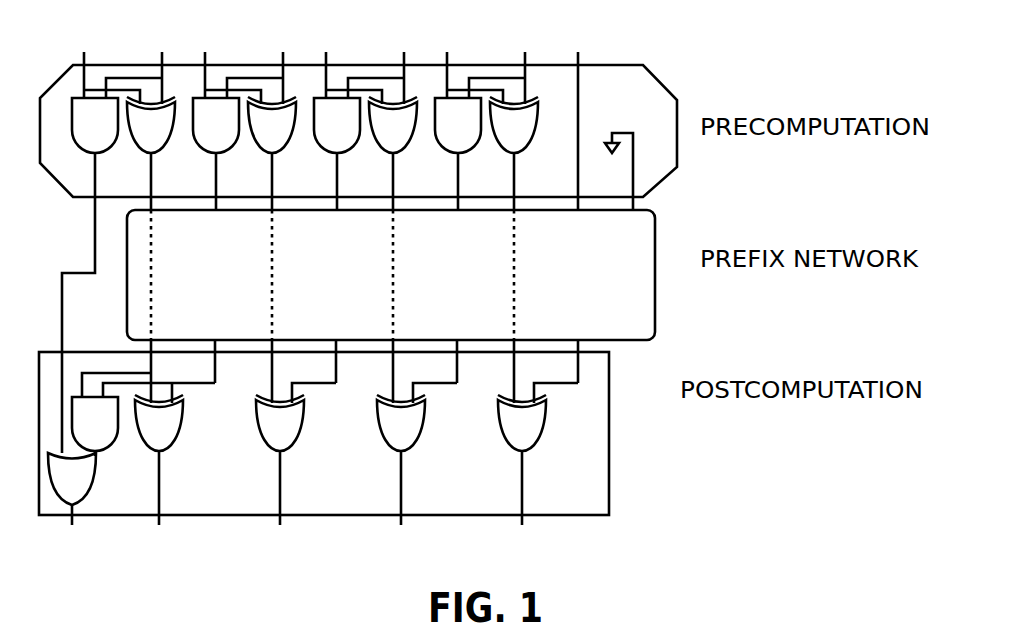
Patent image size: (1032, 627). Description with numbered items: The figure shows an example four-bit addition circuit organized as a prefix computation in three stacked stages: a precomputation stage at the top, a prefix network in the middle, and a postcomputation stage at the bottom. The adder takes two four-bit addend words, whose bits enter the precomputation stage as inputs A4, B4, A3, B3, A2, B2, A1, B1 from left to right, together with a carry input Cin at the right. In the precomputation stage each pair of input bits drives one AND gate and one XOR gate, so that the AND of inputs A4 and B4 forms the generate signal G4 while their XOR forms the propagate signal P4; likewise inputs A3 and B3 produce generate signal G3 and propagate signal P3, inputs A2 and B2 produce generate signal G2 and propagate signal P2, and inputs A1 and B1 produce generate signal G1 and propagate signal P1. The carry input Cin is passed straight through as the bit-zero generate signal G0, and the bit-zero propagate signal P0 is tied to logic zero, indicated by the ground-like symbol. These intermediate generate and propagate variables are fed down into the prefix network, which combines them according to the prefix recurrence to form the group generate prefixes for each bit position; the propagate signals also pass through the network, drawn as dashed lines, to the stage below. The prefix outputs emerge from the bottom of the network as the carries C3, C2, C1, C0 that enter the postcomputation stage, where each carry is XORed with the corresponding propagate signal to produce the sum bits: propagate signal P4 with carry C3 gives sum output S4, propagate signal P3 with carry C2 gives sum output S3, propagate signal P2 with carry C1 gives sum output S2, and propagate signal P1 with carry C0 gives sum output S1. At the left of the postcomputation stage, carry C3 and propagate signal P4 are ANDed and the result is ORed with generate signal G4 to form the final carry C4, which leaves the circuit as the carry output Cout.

The input A4 is at (106, 64).
The input B4 is at (142, 64).
The generate signal G4 is at (94, 275).
The propagate signal P4 is at (153, 250).
The input A3 is at (227, 64).
The input B3 is at (263, 64).
The generate signal G3 is at (220, 154).
The propagate signal P3 is at (274, 250).
The input A2 is at (348, 64).
The input B2 is at (384, 64).
The generate signal G2 is at (341, 154).
The propagate signal P2 is at (395, 250).
The input A1 is at (469, 64).
The input B1 is at (505, 64).
The generate signal G1 is at (462, 154).
The propagate signal P1 is at (516, 250).
The carry input Cin is at (582, 77).
The generate signal G0 is at (594, 170).
The propagate signal P0 is at (634, 171).
The carry C3 is at (164, 381).
The carry C2 is at (329, 381).
The carry C1 is at (450, 381).
The carry C0 is at (571, 381).
The carry C4 (AND/OR gates) C4 is at (83, 456).
The carry output Cout is at (73, 537).
The sum output S4 is at (159, 482).
The sum output S3 is at (280, 482).
The sum output S2 is at (401, 482).
The sum output S1 is at (522, 482).